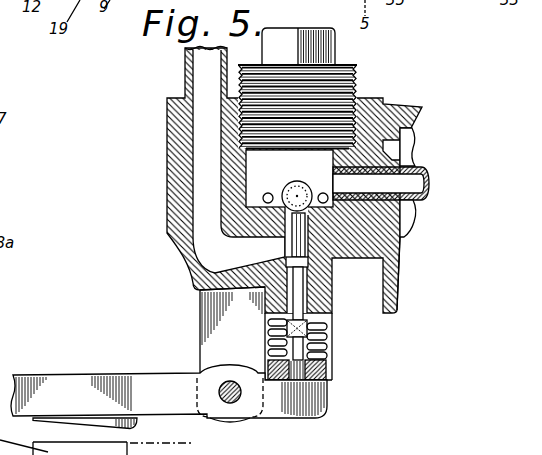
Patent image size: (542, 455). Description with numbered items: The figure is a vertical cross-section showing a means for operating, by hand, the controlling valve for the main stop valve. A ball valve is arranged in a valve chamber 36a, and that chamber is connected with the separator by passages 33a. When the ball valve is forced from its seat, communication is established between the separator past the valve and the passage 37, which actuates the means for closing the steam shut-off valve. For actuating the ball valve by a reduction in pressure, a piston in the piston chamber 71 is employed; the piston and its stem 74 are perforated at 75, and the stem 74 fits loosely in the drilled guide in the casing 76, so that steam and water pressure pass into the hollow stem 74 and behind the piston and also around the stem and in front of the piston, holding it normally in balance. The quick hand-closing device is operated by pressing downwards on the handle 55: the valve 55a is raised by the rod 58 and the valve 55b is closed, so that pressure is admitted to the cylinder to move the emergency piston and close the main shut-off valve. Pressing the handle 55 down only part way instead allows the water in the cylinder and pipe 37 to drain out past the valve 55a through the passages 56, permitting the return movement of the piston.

The passage 37 is at (207, 107).
The valve chamber 36a is at (260, 175).
The passages 33a is at (284, 189).
The casing 76 is at (373, 110).
The perforation 75 is at (388, 181).
The piston chamber 71 is at (405, 220).
The stem 74 is at (403, 258).
The valve 55a is at (262, 286).
The passages 56 is at (294, 292).
The rod 58 is at (329, 334).
The valve 55b is at (327, 360).
The handle 55 is at (165, 392).